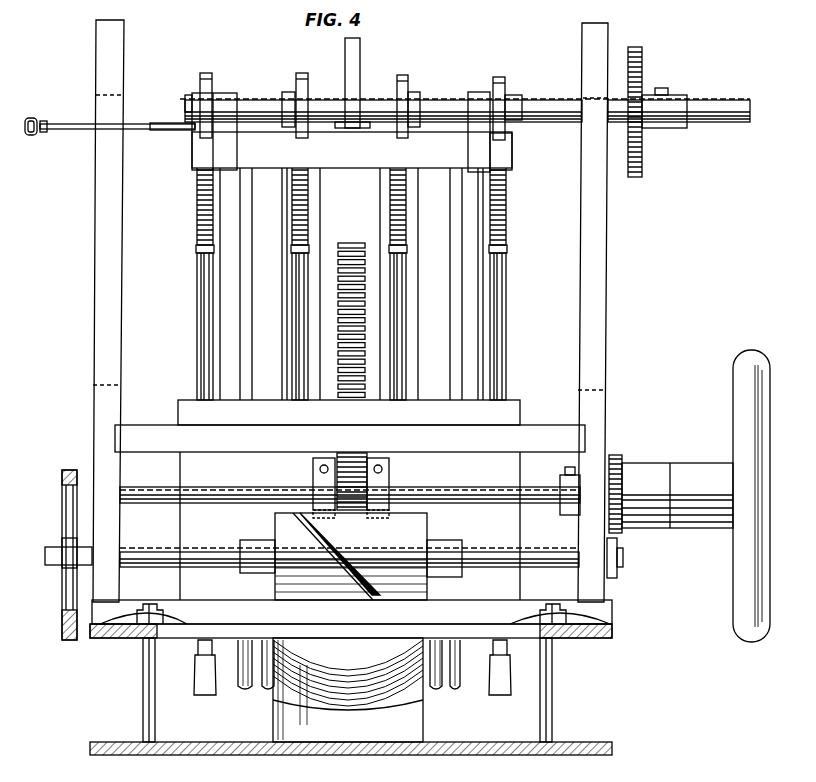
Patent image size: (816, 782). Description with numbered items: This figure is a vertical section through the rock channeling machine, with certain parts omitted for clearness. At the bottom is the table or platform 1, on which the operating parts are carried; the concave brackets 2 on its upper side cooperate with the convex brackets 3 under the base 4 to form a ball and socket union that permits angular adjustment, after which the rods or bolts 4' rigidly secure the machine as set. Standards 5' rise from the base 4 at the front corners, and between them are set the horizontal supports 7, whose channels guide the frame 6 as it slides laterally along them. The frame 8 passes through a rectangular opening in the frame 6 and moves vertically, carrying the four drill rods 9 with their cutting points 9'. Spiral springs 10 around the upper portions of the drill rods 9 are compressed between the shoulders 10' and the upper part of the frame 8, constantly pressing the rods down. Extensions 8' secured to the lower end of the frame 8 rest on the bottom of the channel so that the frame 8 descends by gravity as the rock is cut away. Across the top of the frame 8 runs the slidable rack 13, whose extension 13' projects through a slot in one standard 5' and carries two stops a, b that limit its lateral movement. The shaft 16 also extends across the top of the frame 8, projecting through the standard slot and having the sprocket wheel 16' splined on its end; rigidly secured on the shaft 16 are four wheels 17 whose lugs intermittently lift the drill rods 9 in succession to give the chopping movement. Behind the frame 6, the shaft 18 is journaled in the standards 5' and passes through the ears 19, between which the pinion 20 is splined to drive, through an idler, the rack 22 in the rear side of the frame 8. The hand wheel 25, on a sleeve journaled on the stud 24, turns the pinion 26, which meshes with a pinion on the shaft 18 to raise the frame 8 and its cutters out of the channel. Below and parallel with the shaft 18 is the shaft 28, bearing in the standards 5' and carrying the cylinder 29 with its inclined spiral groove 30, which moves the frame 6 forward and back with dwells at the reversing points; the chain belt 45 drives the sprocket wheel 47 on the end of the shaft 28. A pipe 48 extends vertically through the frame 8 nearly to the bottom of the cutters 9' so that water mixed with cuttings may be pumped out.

The table or platform 1 is at (580, 745).
The spherically concaved supports or brackets 2 is at (348, 690).
The spherical convex supports or brackets 3 is at (348, 673).
The base 4 is at (356, 634).
The rods or bolts 4' is at (345, 690).
The standards or supports 5' is at (350, 311).
The frame 6 is at (349, 500).
The horizontal supports 7 is at (350, 524).
The frame 8 is at (352, 266).
The rods or extensions 8' is at (348, 684).
The drill rods 9 is at (347, 326).
The tools or points 9' is at (351, 667).
The spiral springs 10 is at (347, 206).
The shoulders 10' is at (347, 242).
The slidable rack 13 is at (117, 143).
The extension 13' is at (47, 141).
The shaft 16 is at (465, 95).
The sprocket wheel 16' is at (657, 103).
The wheels 17 is at (499, 77).
The shaft 18 is at (203, 488).
The ears 19 is at (392, 475).
The pinion 20 is at (349, 460).
The rack 22 is at (352, 252).
The stud 24 is at (677, 495).
The hand wheel 25 is at (738, 563).
The pinion 26 is at (622, 452).
The shaft 28 is at (548, 548).
The cylinder 29 is at (420, 528).
The inclined or spiral groove 30 is at (375, 600).
The chain belt 45 is at (62, 473).
The sprocket wheel 47 is at (62, 518).
The pipe or tube 48 is at (344, 66).
The stop a is at (48, 121).
The stop b is at (154, 123).